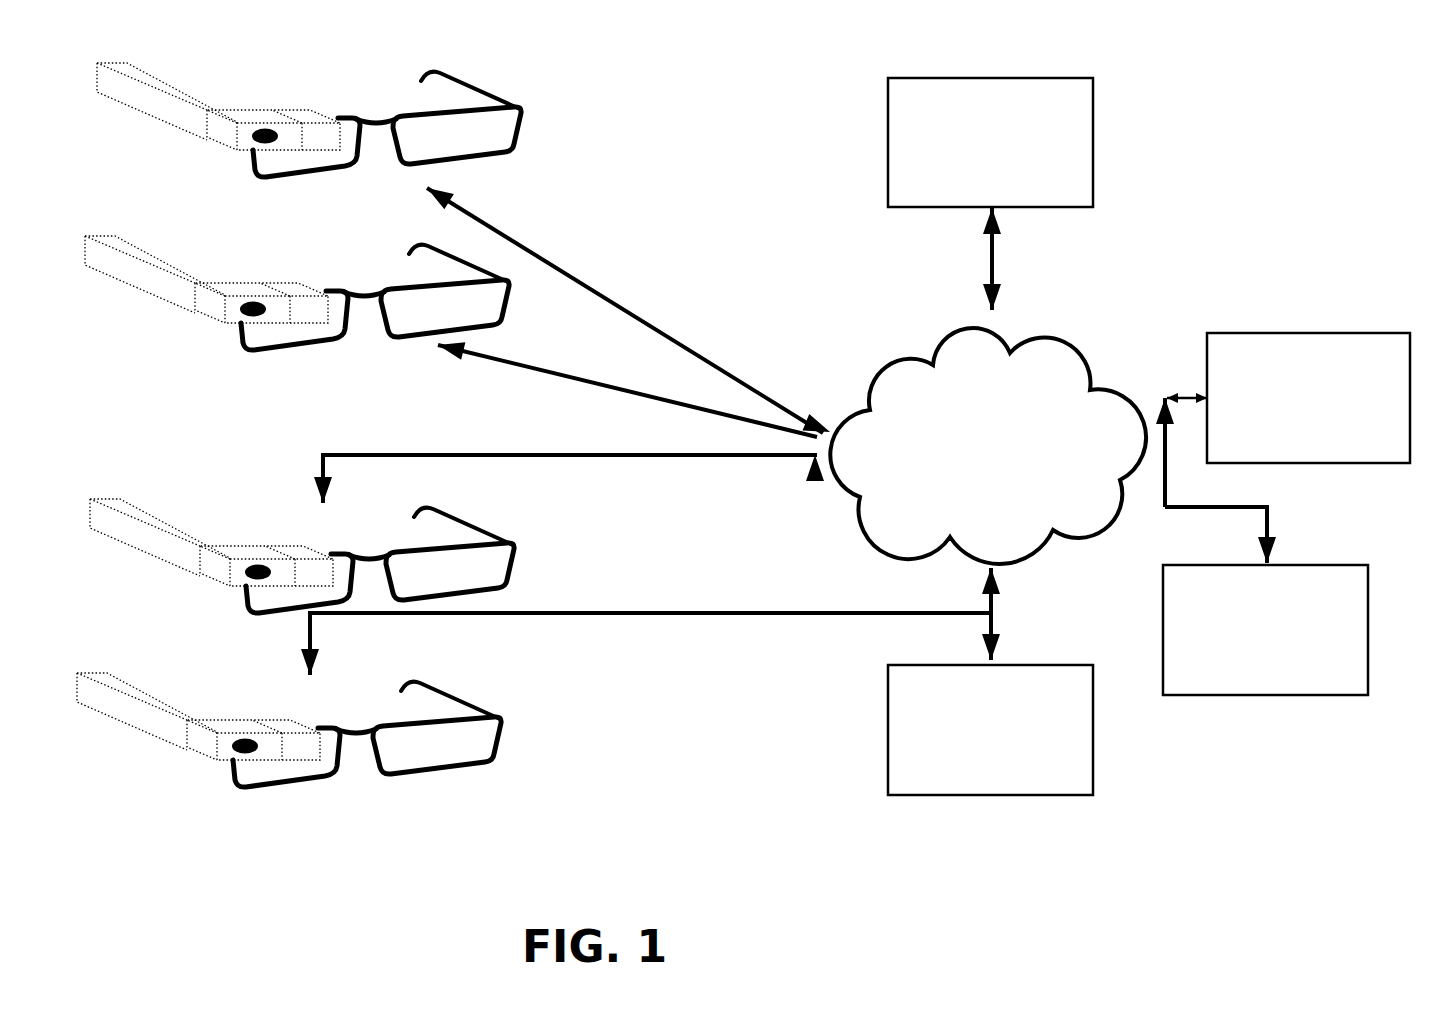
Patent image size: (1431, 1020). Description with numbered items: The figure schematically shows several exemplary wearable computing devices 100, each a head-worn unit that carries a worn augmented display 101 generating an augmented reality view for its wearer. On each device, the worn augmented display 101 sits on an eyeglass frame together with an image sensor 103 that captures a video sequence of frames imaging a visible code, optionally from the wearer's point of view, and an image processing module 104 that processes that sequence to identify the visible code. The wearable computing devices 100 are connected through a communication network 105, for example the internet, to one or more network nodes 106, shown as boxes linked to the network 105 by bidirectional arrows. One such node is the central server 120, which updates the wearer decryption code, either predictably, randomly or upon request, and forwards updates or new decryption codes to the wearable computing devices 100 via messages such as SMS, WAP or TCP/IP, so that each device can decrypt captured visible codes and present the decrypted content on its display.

The wearable computing device 100 is at (250, 183).
The worn augmented display 101 is at (252, 118).
The image sensor 103 is at (247, 137).
The image processing module 104 is at (735, 742).
The communication network 105 is at (995, 307).
The network node 106 is at (993, 797).
The central server 120 is at (1100, 140).